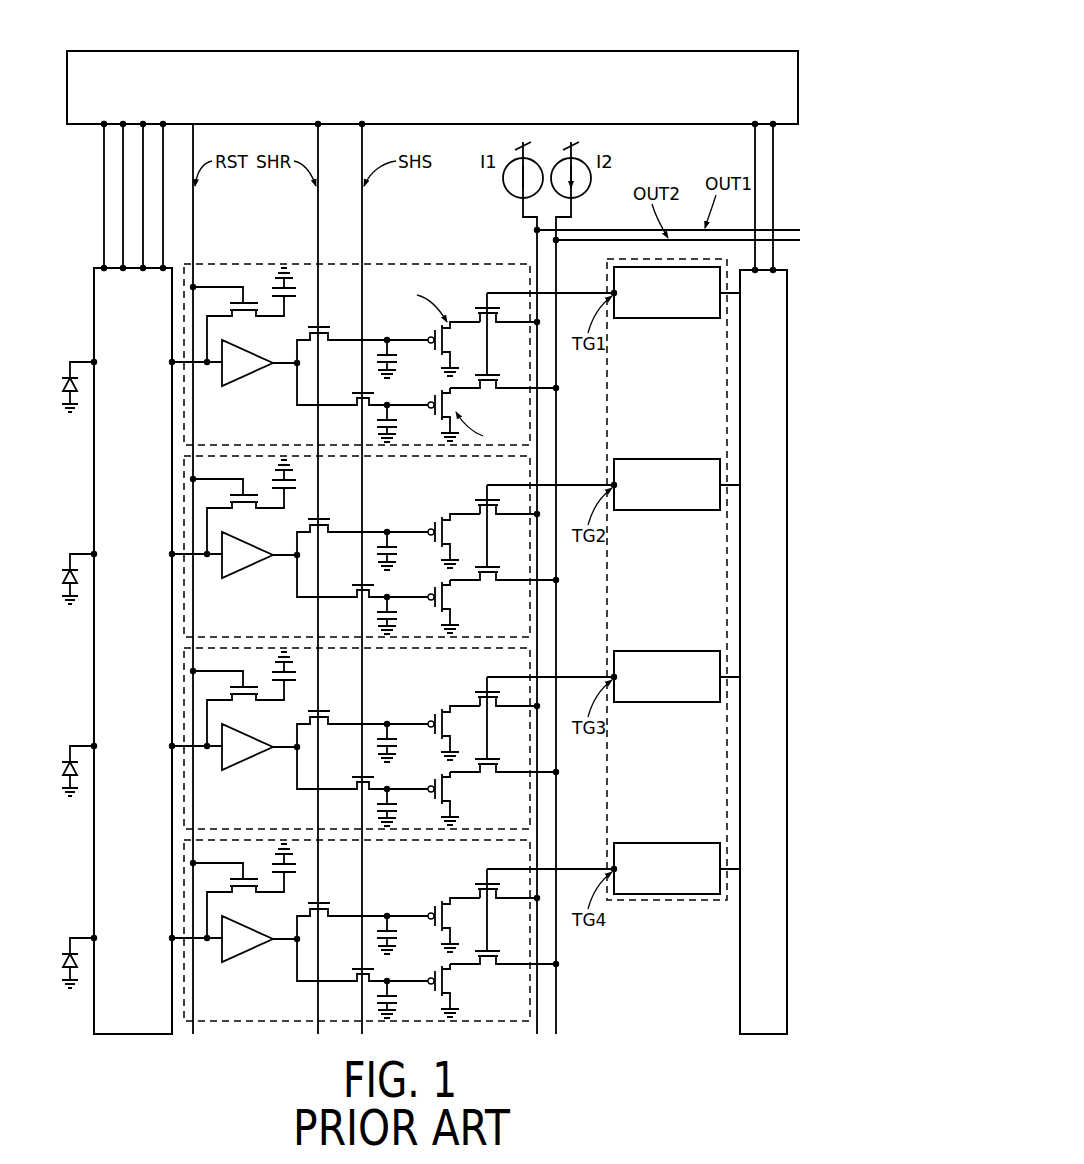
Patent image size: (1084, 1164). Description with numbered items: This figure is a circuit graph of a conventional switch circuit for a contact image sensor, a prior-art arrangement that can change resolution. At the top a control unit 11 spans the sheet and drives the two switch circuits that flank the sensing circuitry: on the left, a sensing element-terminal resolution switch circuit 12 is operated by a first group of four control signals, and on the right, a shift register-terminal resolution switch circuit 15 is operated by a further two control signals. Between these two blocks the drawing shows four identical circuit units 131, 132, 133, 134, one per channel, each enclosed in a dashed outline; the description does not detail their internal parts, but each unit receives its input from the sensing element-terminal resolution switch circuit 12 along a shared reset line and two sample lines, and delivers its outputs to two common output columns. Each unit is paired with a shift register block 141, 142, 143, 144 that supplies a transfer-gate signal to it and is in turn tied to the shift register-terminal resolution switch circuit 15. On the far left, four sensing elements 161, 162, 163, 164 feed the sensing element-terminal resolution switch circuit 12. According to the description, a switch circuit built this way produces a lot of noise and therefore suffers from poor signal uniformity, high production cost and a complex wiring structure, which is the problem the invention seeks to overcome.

The control unit 11 is at (612, 63).
The sensing element-terminal resolution switch circuit 12 is at (93, 278).
The shift register-terminal resolution switch circuit 15 is at (740, 996).
The sensing unit 131 is at (533, 405).
The sensing unit 132 is at (533, 597).
The sensing unit 133 is at (533, 789).
The sensing unit 134 is at (533, 981).
The shift registers 141 is at (680, 321).
The shift registers 142 is at (680, 513).
The shift registers 143 is at (680, 705).
The shift registers 144 is at (680, 897).
The sensing element 161 is at (60, 378).
The sensing element 162 is at (60, 570).
The sensing element 163 is at (60, 762).
The sensing element 164 is at (60, 954).